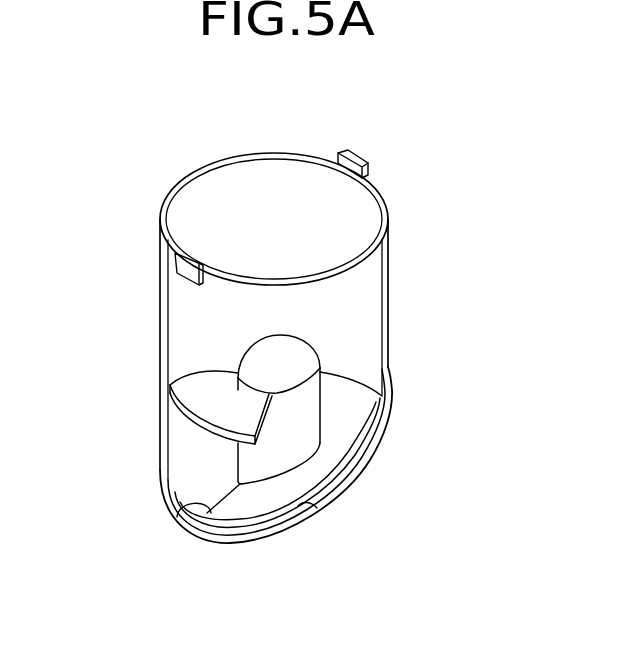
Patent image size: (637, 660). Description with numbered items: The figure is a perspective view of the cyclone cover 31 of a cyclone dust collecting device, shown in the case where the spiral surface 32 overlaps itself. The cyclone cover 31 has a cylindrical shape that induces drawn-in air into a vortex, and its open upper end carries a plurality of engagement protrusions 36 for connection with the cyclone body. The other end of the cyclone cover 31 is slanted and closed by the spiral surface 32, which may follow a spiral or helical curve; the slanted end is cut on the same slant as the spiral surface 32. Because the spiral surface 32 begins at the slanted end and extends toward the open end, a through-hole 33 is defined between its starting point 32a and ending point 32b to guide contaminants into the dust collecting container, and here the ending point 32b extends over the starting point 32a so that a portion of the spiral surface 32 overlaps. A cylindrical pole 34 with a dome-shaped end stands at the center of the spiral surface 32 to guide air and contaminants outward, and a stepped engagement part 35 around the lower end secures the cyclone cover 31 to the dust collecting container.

The cyclone cover 31 is at (147, 167).
The spiral surface 32 is at (316, 474).
The starting point 32a is at (176, 513).
The ending point 32b is at (263, 425).
The through-hole 33 is at (180, 472).
The cylindrical pole 34 is at (322, 368).
The engagement part 35 is at (308, 504).
The engagement protrusion 36 is at (358, 155).